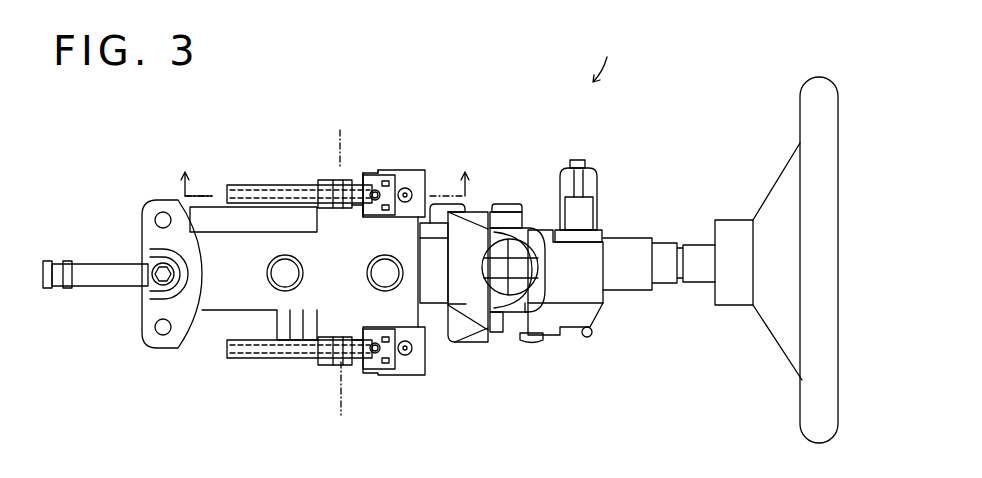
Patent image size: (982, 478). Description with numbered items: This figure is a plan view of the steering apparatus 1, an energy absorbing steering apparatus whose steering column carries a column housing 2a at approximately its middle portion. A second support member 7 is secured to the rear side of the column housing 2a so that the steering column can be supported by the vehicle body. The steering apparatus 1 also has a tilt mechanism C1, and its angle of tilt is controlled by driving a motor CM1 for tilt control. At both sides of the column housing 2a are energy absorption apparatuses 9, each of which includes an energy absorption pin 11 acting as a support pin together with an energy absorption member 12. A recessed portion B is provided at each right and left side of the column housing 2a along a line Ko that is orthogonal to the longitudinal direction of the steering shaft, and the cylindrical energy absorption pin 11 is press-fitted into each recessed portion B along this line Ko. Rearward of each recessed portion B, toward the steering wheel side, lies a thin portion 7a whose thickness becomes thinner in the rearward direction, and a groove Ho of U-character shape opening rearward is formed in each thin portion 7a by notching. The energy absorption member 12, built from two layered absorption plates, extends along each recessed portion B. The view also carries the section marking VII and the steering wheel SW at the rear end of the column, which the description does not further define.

The steering apparatus 1 is at (616, 53).
The column housing 2a is at (253, 276).
The second support member 7 is at (359, 172).
The thin portion 7a is at (384, 172).
The energy absorption apparatus 9 is at (412, 162).
The energy absorption pin 11 is at (333, 180).
The energy absorption member 12 is at (254, 184).
The recessed portion B is at (353, 210).
The line Ko is at (338, 261).
The groove Ho is at (425, 184).
The tilt mechanism C1 is at (508, 204).
The motor CM1 is at (582, 159).
The steering wheel SW is at (821, 76).
The section line VII is at (323, 171).